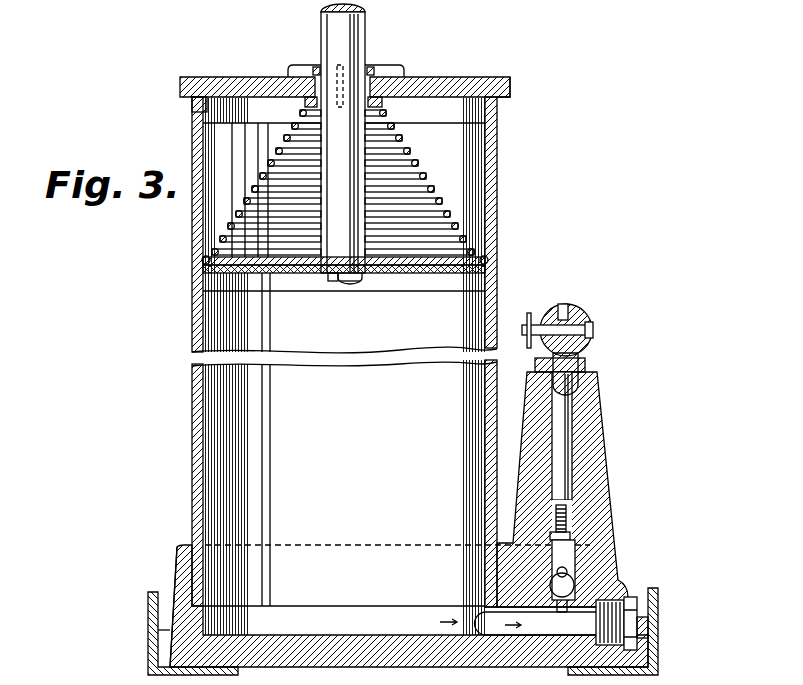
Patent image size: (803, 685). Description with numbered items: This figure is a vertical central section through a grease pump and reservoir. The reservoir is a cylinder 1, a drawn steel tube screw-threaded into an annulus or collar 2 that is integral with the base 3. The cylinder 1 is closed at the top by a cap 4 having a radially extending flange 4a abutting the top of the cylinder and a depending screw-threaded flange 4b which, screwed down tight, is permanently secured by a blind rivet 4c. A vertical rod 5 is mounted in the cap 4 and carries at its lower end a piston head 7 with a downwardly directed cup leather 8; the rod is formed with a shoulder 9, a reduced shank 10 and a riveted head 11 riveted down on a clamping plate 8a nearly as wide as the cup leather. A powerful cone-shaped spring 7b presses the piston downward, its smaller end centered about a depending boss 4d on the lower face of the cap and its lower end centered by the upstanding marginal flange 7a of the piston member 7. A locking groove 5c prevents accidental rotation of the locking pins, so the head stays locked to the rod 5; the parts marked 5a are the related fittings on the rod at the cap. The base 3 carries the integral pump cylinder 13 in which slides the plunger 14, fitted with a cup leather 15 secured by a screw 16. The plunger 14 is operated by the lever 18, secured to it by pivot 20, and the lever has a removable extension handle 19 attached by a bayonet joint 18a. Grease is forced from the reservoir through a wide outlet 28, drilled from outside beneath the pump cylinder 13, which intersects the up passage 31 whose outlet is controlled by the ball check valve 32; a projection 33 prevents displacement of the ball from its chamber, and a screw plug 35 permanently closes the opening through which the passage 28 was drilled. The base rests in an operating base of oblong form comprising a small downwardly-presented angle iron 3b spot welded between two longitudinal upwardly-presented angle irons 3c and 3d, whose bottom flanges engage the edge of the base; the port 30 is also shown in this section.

The cylinder 1 is at (192, 379).
The annulus or collar 2 is at (181, 552).
The base 3 is at (368, 652).
The angle iron 3b is at (642, 649).
The angle iron 3c is at (152, 606).
The angle iron 3d is at (649, 622).
The cap 4 is at (468, 85).
The radially extending flange 4a is at (511, 86).
The depending screw-threaded flange 4b is at (492, 99).
The blind rivet 4c is at (192, 108).
The depending boss 4d is at (421, 78).
The vertical rod 5 is at (337, 30).
The stem nut 5a is at (371, 70).
The locking groove 5c is at (400, 78).
The piston head 7 is at (195, 263).
The upstanding marginal flange 7a is at (489, 258).
The spring 7b is at (428, 178).
The cup leather 8 is at (492, 273).
The clamping plate 8a is at (398, 287).
The shoulder 9 is at (340, 283).
The reduced shank 10 is at (332, 273).
The riveted head 11 is at (350, 285).
The pump cylinder 13 is at (580, 502).
The plunger 14 is at (560, 470).
The cup leather 15 is at (573, 532).
The screw 16 is at (560, 548).
The lever 18 is at (578, 318).
The bayonet joint 18a is at (363, 679).
The extension handle 19 is at (457, 679).
The pivot 20 is at (593, 331).
The outlet 28 is at (536, 622).
The port 30 is at (415, 679).
The up passage 31 is at (562, 612).
The ball check valve 32 is at (578, 582).
The projection 33 is at (572, 572).
The screw plug 35 is at (636, 622).